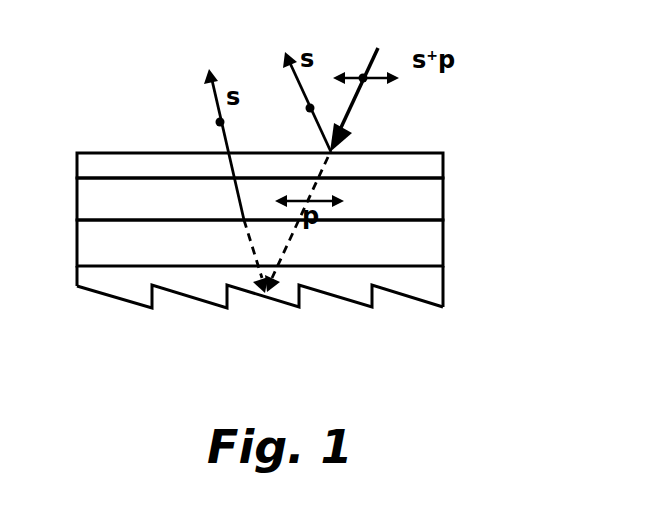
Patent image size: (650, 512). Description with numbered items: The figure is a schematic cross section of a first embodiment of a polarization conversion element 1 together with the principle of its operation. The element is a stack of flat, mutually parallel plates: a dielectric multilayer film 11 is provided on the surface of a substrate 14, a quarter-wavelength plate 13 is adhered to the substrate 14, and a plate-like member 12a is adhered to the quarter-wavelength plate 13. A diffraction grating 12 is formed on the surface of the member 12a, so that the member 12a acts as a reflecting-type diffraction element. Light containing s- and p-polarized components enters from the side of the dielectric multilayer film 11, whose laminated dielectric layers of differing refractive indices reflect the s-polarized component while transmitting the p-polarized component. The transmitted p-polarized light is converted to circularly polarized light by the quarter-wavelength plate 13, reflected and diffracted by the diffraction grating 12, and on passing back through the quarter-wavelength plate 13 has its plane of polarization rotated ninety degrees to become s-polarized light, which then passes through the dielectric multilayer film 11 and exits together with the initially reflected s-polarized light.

The polarization conversion element 1 is at (288, 399).
The dielectric multilayer film 11 is at (443, 160).
The substrate 14 is at (443, 193).
The quarter-wavelength plate 13 is at (443, 240).
The diffraction grating 12 is at (335, 297).
The plate-like member 12a is at (443, 287).